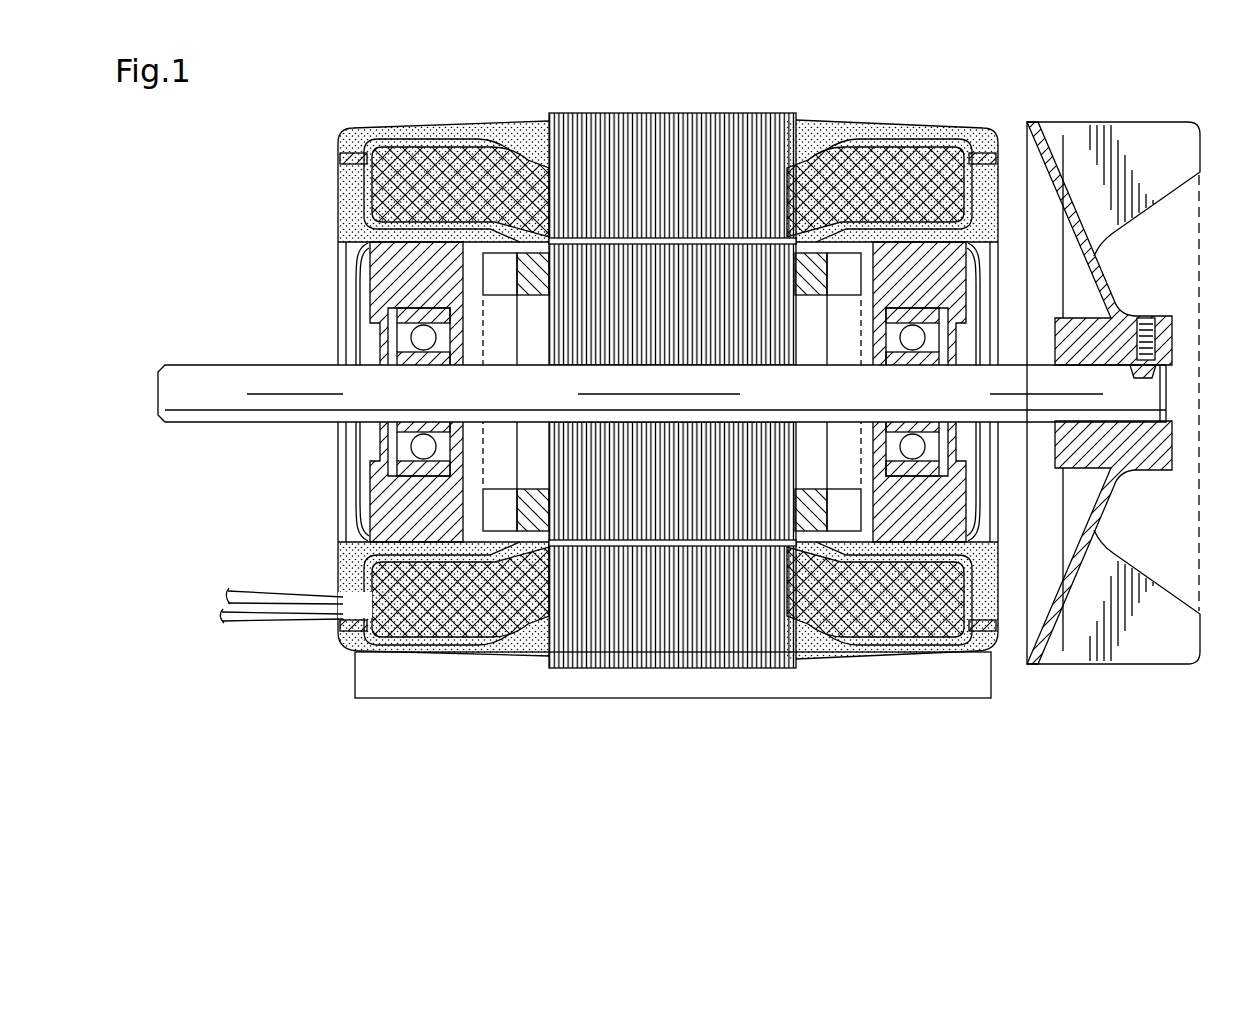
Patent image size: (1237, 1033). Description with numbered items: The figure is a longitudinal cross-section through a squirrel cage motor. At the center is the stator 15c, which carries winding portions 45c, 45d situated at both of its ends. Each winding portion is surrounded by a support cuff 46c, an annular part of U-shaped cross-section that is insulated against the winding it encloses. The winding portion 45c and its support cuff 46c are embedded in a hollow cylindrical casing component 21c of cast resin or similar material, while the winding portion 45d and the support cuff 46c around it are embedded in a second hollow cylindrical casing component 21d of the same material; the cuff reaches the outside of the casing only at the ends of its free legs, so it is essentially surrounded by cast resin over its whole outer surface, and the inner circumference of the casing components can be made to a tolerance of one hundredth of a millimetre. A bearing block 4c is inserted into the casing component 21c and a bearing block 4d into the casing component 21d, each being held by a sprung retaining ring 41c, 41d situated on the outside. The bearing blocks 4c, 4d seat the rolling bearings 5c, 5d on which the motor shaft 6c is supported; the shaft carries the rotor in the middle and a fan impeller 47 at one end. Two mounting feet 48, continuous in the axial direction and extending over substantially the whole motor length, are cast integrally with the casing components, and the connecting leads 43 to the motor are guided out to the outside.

The bearing block 4c is at (400, 500).
The bearing block 4d is at (950, 480).
The rolling bearing 5c is at (400, 357).
The rolling bearing 5d is at (913, 360).
The motor shaft 6c is at (180, 393).
The stator 15c is at (667, 143).
The casing component 21c is at (527, 137).
The casing component 21d is at (815, 137).
The sprung retaining ring 41c is at (352, 273).
The sprung retaining ring 41d is at (985, 284).
The connecting leads 43 is at (257, 613).
The winding portion 45c is at (478, 167).
The winding portion 45d is at (887, 160).
The support cuff 46c is at (402, 137).
The fan impeller 47 is at (1177, 633).
The mounting feet 48 is at (383, 688).